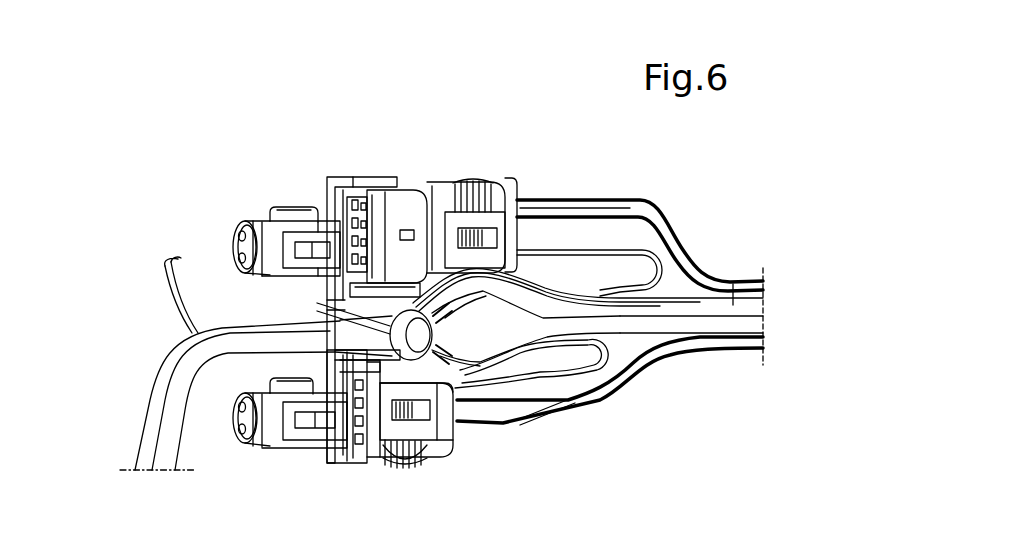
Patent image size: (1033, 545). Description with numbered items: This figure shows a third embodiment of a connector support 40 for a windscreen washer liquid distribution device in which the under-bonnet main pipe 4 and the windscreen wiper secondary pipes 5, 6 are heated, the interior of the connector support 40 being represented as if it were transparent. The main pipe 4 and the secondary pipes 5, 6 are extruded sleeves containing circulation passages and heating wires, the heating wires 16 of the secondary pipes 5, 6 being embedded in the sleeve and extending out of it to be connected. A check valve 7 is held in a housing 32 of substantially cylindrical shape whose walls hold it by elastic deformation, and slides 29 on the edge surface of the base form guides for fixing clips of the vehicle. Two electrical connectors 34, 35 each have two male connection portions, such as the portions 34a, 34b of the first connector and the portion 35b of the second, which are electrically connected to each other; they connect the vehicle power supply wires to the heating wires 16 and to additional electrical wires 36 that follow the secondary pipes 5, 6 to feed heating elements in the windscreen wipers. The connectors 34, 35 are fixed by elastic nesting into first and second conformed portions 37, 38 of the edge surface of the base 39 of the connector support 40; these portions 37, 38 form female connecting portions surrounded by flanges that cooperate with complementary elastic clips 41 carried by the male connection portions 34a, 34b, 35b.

The under-bonnet main pipe 4 is at (175, 408).
The windscreen wiper secondary pipe 5 is at (735, 298).
The windscreen wiper secondary pipe 6 is at (692, 325).
The check valve 7 is at (463, 324).
The heating wire 16 is at (665, 263).
The slide 29 is at (358, 178).
The housing 32 is at (394, 334).
The electrical connector 34 is at (507, 176).
The male connection portion 34a is at (247, 227).
The male connection portion 34b is at (442, 205).
The electrical connector 35 is at (460, 449).
The male connection portion 35b is at (430, 448).
The additional electrical wire 36 is at (625, 200).
The conformed portion 37 is at (413, 182).
The conformed portion 38 is at (295, 213).
The base 39 is at (288, 442).
The connector support 40 is at (344, 466).
The elastic clip 41 is at (296, 262).